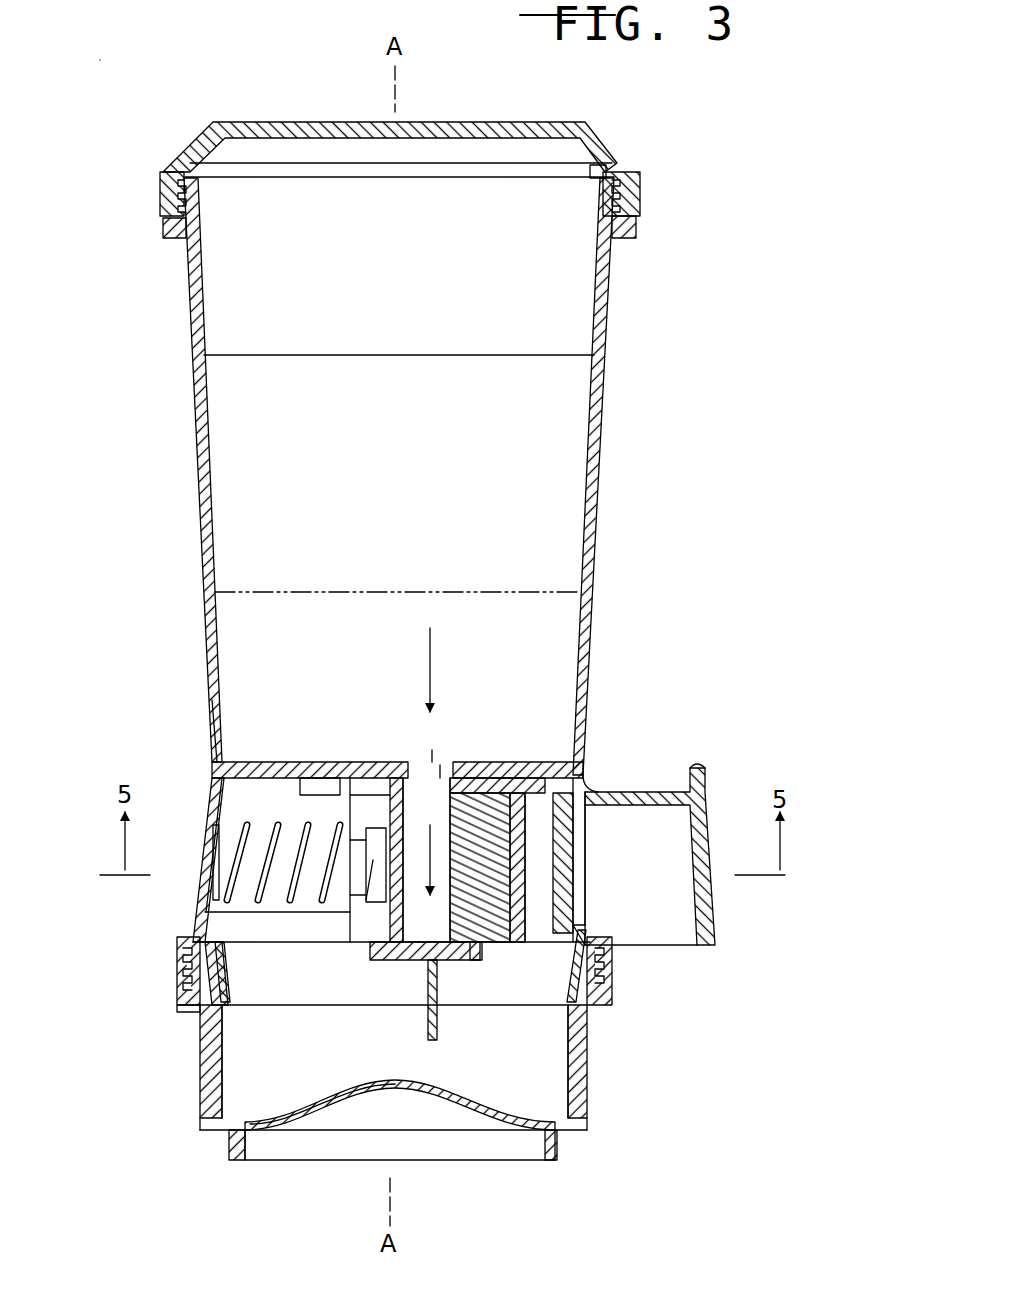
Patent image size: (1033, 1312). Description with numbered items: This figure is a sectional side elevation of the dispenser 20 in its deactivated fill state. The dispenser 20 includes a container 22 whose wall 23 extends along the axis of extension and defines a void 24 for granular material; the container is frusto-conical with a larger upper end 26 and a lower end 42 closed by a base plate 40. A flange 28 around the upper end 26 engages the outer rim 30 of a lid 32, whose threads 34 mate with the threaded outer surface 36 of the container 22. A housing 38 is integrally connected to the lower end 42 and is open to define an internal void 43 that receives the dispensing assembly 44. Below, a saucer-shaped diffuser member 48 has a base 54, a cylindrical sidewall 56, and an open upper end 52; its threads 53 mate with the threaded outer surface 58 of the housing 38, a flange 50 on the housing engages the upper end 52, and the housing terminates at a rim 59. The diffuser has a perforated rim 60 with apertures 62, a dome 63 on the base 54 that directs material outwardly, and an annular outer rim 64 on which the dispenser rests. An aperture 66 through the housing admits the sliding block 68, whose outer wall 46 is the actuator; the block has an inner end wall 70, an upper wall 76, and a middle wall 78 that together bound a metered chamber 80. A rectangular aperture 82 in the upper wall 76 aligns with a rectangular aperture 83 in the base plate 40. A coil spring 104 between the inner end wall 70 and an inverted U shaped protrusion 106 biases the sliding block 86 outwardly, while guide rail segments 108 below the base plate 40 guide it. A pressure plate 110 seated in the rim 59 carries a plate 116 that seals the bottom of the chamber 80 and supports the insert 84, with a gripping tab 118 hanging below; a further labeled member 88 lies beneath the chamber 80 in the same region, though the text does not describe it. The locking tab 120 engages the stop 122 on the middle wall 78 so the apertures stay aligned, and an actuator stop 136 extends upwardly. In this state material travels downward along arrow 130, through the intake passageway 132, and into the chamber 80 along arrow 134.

The dispenser 20 is at (150, 122).
The container 22 is at (610, 433).
The wall 23 is at (590, 622).
The void 24 is at (245, 512).
The upper end 26 is at (600, 176).
The flange 28 is at (165, 230).
The outer rim 30 is at (640, 210).
The lid 32 is at (530, 122).
The threads 34 is at (625, 200).
The threaded outer surface 36 is at (176, 198).
The housing 38 is at (200, 850).
The base plate 40 is at (236, 762).
The lower end 42 is at (210, 724).
The internal void 43 is at (208, 790).
The dispensing assembly 44 is at (728, 1068).
The outer wall 46 is at (710, 925).
The diffuser member 48 is at (592, 1054).
The flange 50 is at (178, 962).
The open upper end 52 is at (604, 976).
The threads 53 is at (226, 982).
The base 54 is at (455, 1100).
The cylindrical sidewall 56 is at (200, 1048).
The threaded outer surface 58 is at (180, 986).
The rim 59 is at (196, 1010).
The perforated rim 60 is at (228, 1132).
The apertures 62 is at (570, 1132).
The dome 63 is at (345, 1094).
The annular outer rim 64 is at (560, 1162).
The aperture 66 is at (590, 760).
The sliding block 68 is at (625, 790).
The inner end wall 70 is at (378, 800).
The upper wall 76 is at (500, 776).
The middle wall 78 is at (577, 945).
The chamber 80 is at (426, 860).
The rectangular aperture 82 is at (440, 778).
The rectangular aperture 83 is at (432, 762).
The insert 84 is at (528, 945).
The sliding block 86 is at (535, 778).
The seat 88 is at (388, 960).
The coil spring 104 is at (277, 828).
The inverted U shaped protrusion 106 is at (224, 880).
The guide rail segments 108 is at (300, 793).
The pressure plate 110 is at (205, 936).
The plate 116 is at (468, 950).
The gripping tab 118 is at (428, 1020).
The locking tab 120 is at (595, 927).
The stop 122 is at (578, 842).
The arrow 130 is at (432, 632).
The intake passageway 132 is at (415, 762).
The arrow 134 is at (378, 815).
The actuator stop 136 is at (702, 772).